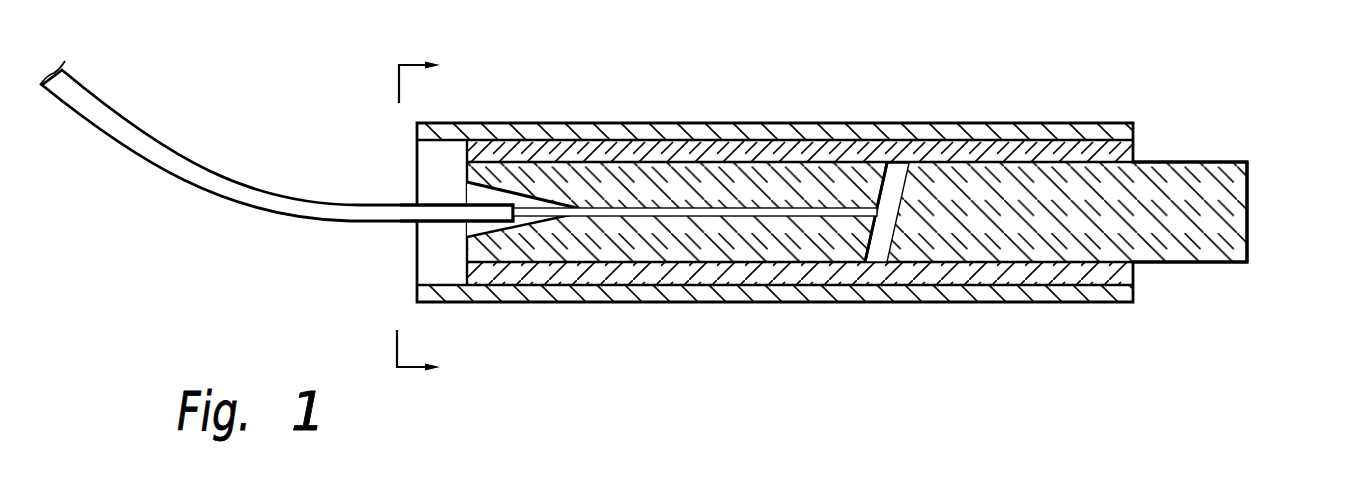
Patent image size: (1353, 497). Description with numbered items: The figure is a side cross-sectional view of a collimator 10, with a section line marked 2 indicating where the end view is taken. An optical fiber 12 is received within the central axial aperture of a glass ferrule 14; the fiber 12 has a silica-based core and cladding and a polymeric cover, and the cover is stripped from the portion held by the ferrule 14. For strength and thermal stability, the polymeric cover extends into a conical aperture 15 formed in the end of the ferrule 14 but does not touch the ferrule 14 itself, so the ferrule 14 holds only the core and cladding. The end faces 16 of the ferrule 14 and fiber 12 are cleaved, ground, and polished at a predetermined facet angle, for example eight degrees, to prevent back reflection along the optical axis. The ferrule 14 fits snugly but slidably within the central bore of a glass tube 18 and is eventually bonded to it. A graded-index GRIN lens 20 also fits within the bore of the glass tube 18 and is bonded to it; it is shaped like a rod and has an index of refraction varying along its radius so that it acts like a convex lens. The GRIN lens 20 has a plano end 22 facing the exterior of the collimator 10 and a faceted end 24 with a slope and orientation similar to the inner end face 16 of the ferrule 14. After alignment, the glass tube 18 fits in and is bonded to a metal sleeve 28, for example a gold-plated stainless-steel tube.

The collimator 10 is at (1086, 338).
The optical fiber 12 is at (118, 121).
The glass ferrule 14 is at (713, 177).
The conical aperture 15 is at (477, 229).
The end face 16 is at (868, 238).
The glass tube 18 is at (799, 150).
The GRIN lens 20 is at (1190, 162).
The plano end 22 is at (1248, 211).
The faceted end 24 is at (896, 172).
The metal sleeve 28 is at (593, 122).
The section line 2- 2 is at (429, 220).